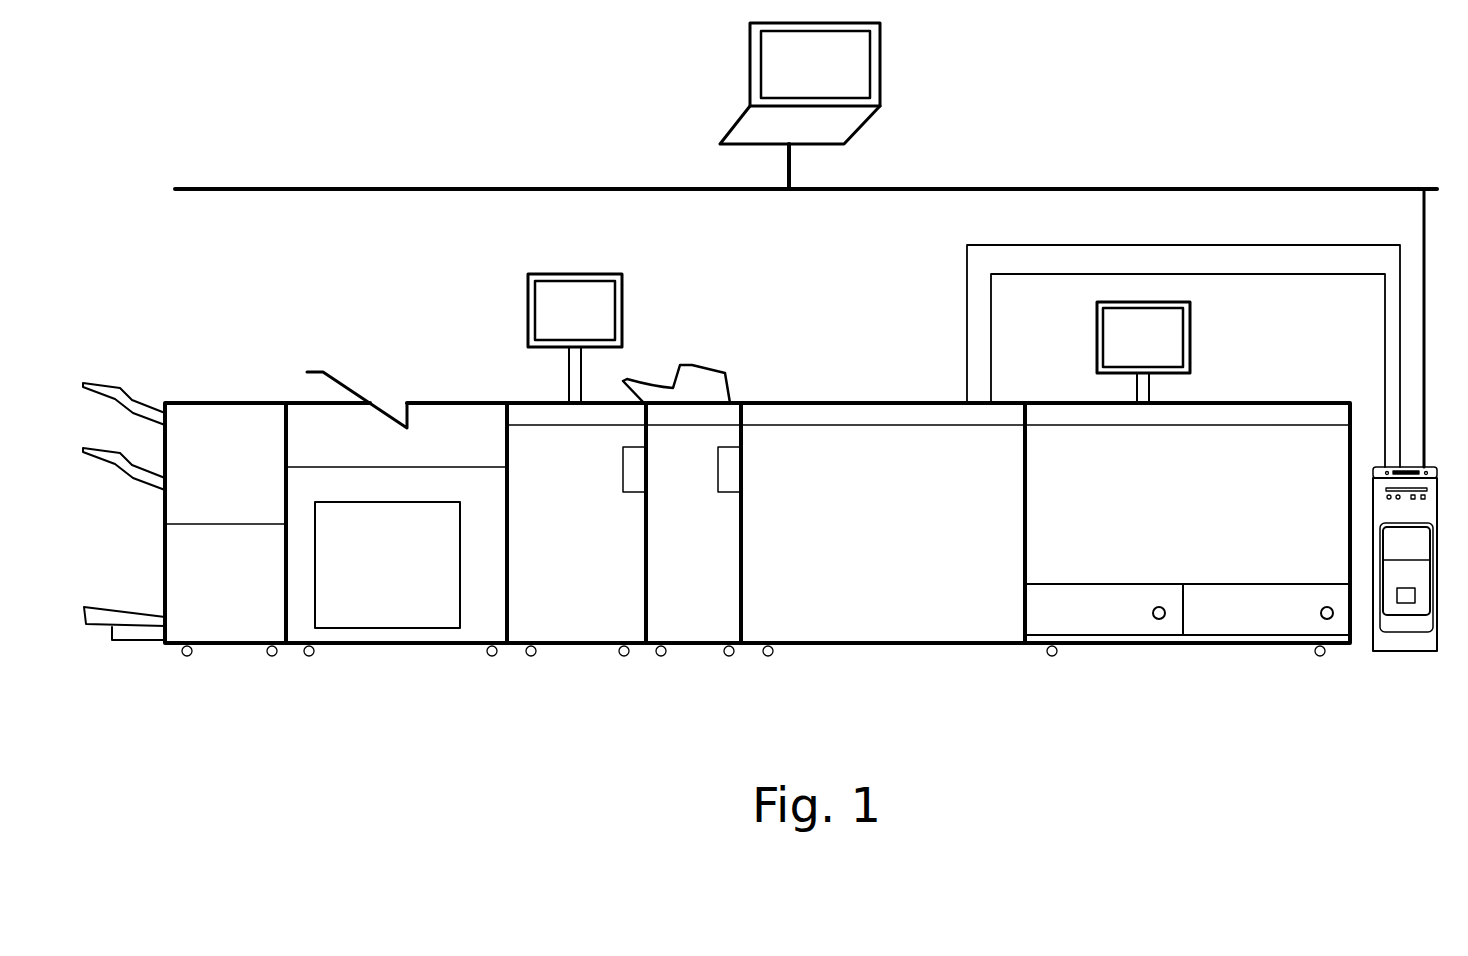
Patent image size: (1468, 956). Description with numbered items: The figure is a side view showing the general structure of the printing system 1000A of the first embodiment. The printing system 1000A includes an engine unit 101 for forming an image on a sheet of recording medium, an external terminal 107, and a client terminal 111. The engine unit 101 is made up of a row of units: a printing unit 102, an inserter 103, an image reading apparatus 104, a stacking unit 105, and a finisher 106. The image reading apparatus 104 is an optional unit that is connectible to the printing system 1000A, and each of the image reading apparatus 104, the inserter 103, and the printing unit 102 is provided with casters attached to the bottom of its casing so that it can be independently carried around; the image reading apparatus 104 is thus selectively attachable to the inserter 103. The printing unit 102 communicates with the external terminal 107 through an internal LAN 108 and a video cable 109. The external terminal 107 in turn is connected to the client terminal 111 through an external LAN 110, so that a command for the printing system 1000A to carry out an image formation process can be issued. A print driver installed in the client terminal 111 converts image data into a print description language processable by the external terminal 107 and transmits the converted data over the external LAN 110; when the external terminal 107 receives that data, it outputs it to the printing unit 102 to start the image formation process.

The printing system 1000A is at (1450, 73).
The engine unit 101 is at (82, 695).
The printing unit 102 is at (863, 647).
The inserter 103 is at (700, 647).
The image reading apparatus 104 is at (580, 647).
The stacking unit 105 is at (460, 645).
The finisher 106 is at (253, 645).
The external terminal 107 is at (1417, 652).
The internal LAN 108 is at (1290, 274).
The video cable 109 is at (1290, 245).
The external LAN 110 is at (1147, 188).
The client terminal 111 is at (748, 73).